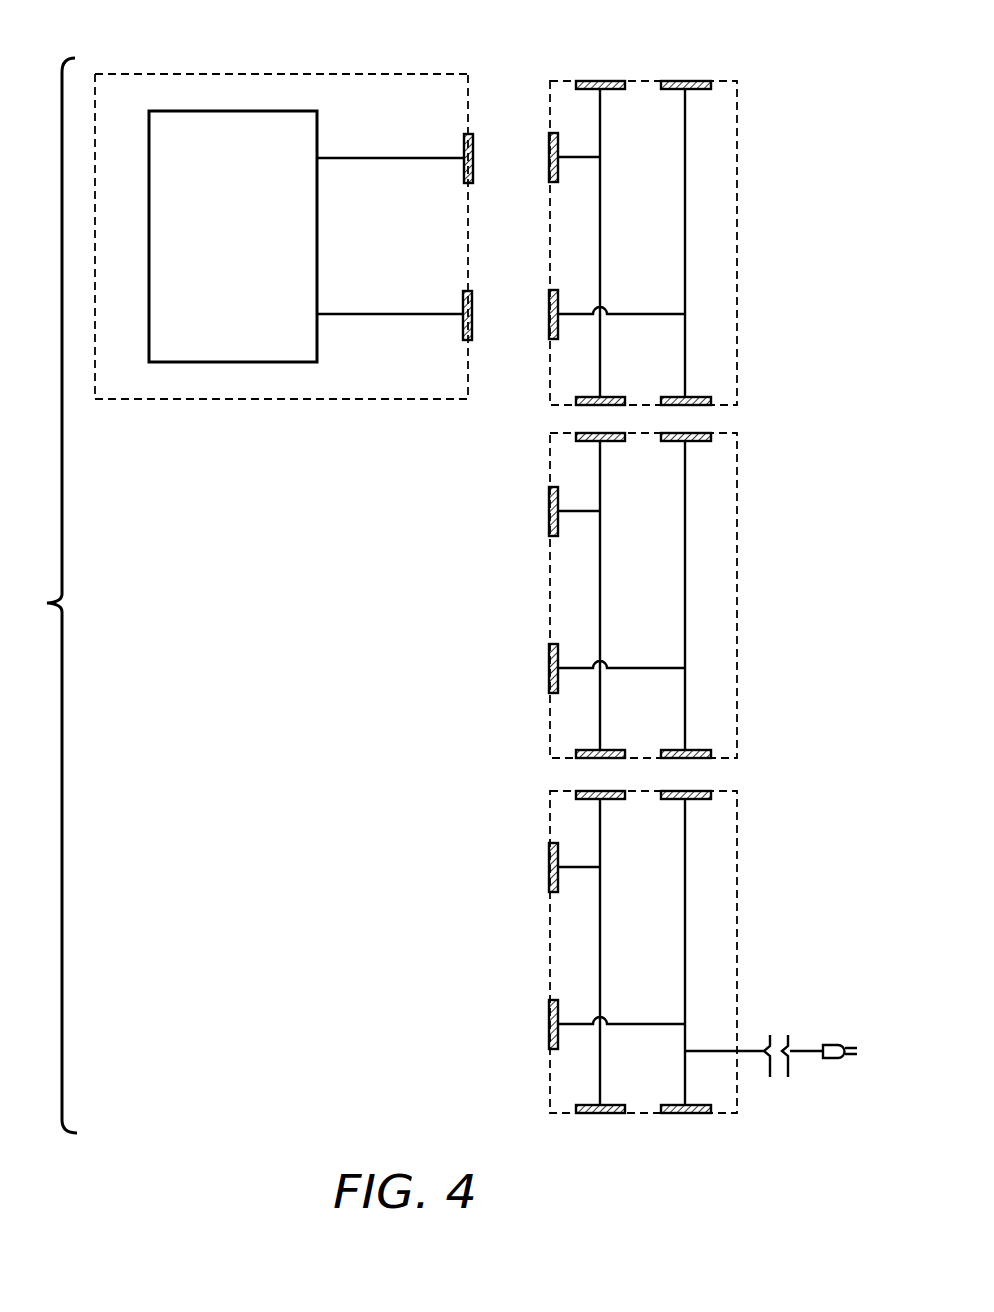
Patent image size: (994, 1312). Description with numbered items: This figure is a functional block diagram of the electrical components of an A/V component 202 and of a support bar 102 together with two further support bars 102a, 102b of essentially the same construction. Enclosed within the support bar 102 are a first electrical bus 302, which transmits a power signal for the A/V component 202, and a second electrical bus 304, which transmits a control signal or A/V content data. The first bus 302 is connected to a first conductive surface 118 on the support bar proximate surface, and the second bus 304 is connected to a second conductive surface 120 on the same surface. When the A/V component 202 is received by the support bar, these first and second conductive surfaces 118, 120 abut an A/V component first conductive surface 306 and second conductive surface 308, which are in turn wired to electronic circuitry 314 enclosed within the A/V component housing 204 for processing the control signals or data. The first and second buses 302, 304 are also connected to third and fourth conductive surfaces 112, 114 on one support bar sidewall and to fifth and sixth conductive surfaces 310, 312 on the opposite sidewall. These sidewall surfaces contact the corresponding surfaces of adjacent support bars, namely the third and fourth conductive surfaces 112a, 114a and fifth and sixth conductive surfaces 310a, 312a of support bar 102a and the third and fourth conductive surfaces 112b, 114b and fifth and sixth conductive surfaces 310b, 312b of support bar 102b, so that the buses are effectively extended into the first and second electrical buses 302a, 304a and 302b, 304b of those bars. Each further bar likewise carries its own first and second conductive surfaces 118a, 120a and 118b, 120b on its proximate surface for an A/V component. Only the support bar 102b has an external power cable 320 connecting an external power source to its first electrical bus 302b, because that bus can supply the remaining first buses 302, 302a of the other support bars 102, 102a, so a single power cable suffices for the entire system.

The A/V component 202 is at (157, 84).
The A/V component housing 204 is at (205, 400).
The electronic circuitry 314 is at (237, 122).
The second conductive surface 308 is at (467, 148).
The first conductive surface 306 is at (467, 312).
The support bar 102 is at (722, 153).
The support bar 102a is at (722, 507).
The support bar 102b is at (722, 862).
The sixth conductive surface 312 is at (600, 81).
The fifth conductive surface 310 is at (692, 81).
The sixth conductive surface 312a is at (598, 433).
The fifth conductive surface 310a is at (700, 433).
The sixth conductive surface 312b is at (598, 791).
The fifth conductive surface 310b is at (700, 791).
The second electrical bus 304 is at (602, 132).
The first electrical bus 302 is at (687, 177).
The second electrical bus 304a is at (602, 487).
The first electrical bus 302a is at (687, 532).
The second electrical bus 304b is at (602, 843).
The first electrical bus 302b is at (687, 888).
The second conductive surface 120 is at (549, 163).
The first conductive surface 118 is at (550, 307).
The second conductive surface 120a is at (550, 513).
The first conductive surface 118a is at (550, 661).
The second conductive surface 120b is at (550, 868).
The first conductive surface 118b is at (550, 1017).
The fourth conductive surface 114 is at (608, 396).
The third conductive surface 112 is at (697, 397).
The fourth conductive surface 114a is at (608, 750).
The third conductive surface 112a is at (697, 750).
The fourth conductive surface 114b is at (608, 1106).
The third conductive surface 112b is at (700, 1107).
The external power cable 320 is at (752, 1048).